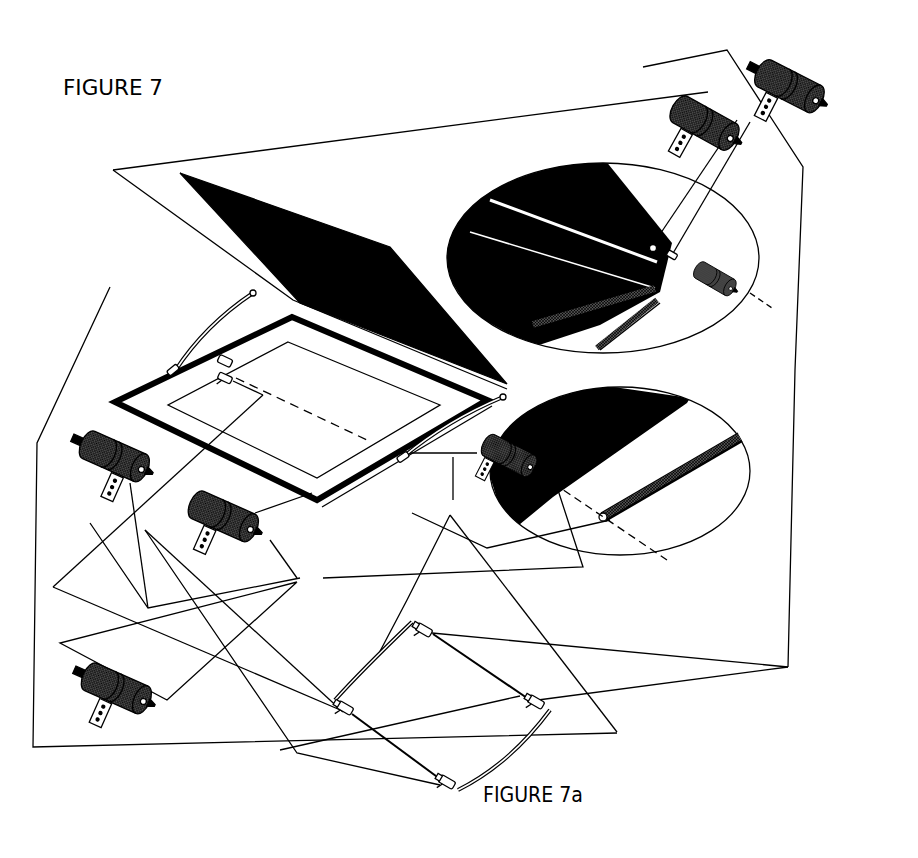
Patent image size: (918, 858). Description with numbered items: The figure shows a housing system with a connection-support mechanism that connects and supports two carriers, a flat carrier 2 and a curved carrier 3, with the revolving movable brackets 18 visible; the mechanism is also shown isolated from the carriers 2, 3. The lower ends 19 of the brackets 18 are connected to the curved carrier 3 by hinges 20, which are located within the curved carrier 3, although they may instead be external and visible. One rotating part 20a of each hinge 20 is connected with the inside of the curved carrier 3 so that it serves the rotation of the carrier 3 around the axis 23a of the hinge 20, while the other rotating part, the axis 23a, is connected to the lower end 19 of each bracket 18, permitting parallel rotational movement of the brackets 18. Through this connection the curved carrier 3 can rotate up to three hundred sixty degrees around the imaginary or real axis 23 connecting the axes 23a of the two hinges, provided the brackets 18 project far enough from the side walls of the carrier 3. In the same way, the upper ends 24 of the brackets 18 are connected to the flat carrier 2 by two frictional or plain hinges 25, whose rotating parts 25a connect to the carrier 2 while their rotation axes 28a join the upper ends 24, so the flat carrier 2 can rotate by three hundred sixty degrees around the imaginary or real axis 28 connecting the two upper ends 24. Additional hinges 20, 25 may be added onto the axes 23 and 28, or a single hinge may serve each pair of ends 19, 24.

The flat carrier 2 is at (253, 257).
The curved carrier 3 is at (363, 497).
The revolving movable bracket 18 is at (228, 318).
The lower end of bracket 19 is at (172, 370).
The hinge 20 is at (203, 523).
The rotating part of hinge 20a is at (103, 495).
The axis connecting the hinges 23 is at (278, 425).
The axis of hinge 23a is at (321, 593).
The upper end of bracket 24 is at (250, 292).
The hinge 25 is at (711, 110).
The rotating part of hinge 25a is at (665, 147).
The axis connecting the upper ends 28 is at (287, 320).
The rotation axis of hinge 28a is at (827, 117).